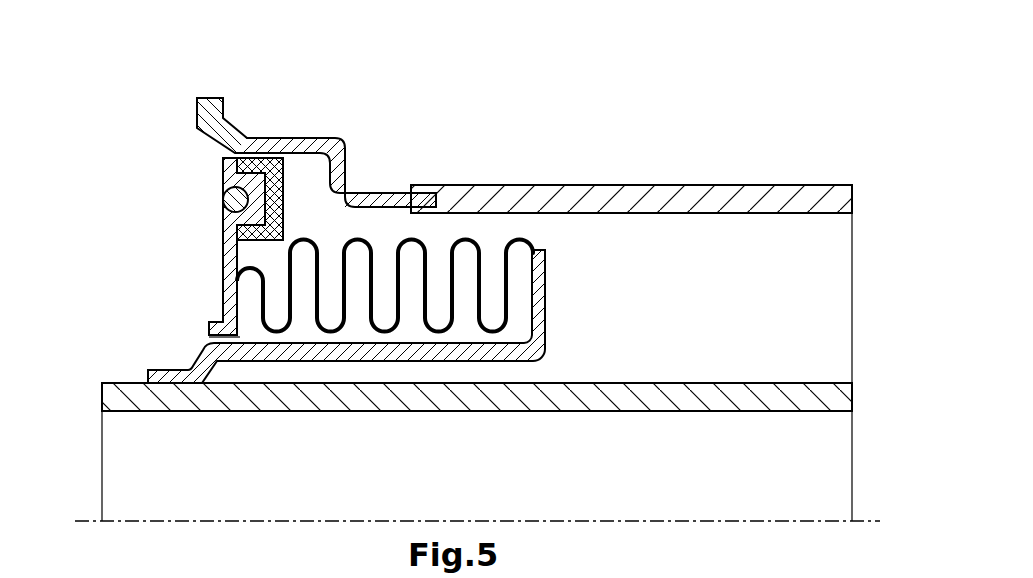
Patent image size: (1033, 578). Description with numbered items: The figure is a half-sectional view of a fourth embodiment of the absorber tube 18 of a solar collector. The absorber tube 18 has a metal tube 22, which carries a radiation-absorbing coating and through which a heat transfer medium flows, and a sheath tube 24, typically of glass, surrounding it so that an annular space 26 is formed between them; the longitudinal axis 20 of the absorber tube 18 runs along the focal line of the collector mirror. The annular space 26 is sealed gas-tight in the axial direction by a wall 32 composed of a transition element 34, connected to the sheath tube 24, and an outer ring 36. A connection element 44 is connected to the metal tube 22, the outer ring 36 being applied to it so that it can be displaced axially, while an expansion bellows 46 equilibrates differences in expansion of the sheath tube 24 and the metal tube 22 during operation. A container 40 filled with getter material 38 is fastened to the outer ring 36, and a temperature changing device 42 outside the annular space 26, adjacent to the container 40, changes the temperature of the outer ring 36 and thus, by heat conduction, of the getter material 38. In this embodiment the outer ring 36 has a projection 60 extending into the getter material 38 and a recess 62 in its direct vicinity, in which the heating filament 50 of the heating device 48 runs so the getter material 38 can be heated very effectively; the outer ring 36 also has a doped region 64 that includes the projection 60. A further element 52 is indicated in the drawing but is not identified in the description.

The absorber tube 18 is at (697, 127).
The longitudinal axis 20 is at (142, 521).
The metal tube 22 is at (683, 383).
The sheath tube 24 is at (503, 197).
The annular space 26 is at (743, 289).
The wall 32 is at (153, 112).
The transition element 34 is at (301, 152).
The outer ring 36 is at (231, 312).
The getter material 38 is at (287, 172).
The container 40 is at (279, 138).
The temperature changing device 42 is at (223, 198).
The heating device 48 is at (165, 199).
The heating filament 50 is at (200, 199).
The connection element 44 is at (545, 330).
The expansion bellows 46 is at (449, 231).
The fold 52 is at (302, 272).
The projection 60 is at (287, 188).
The recess 62 is at (211, 187).
The doped region 64 is at (228, 222).